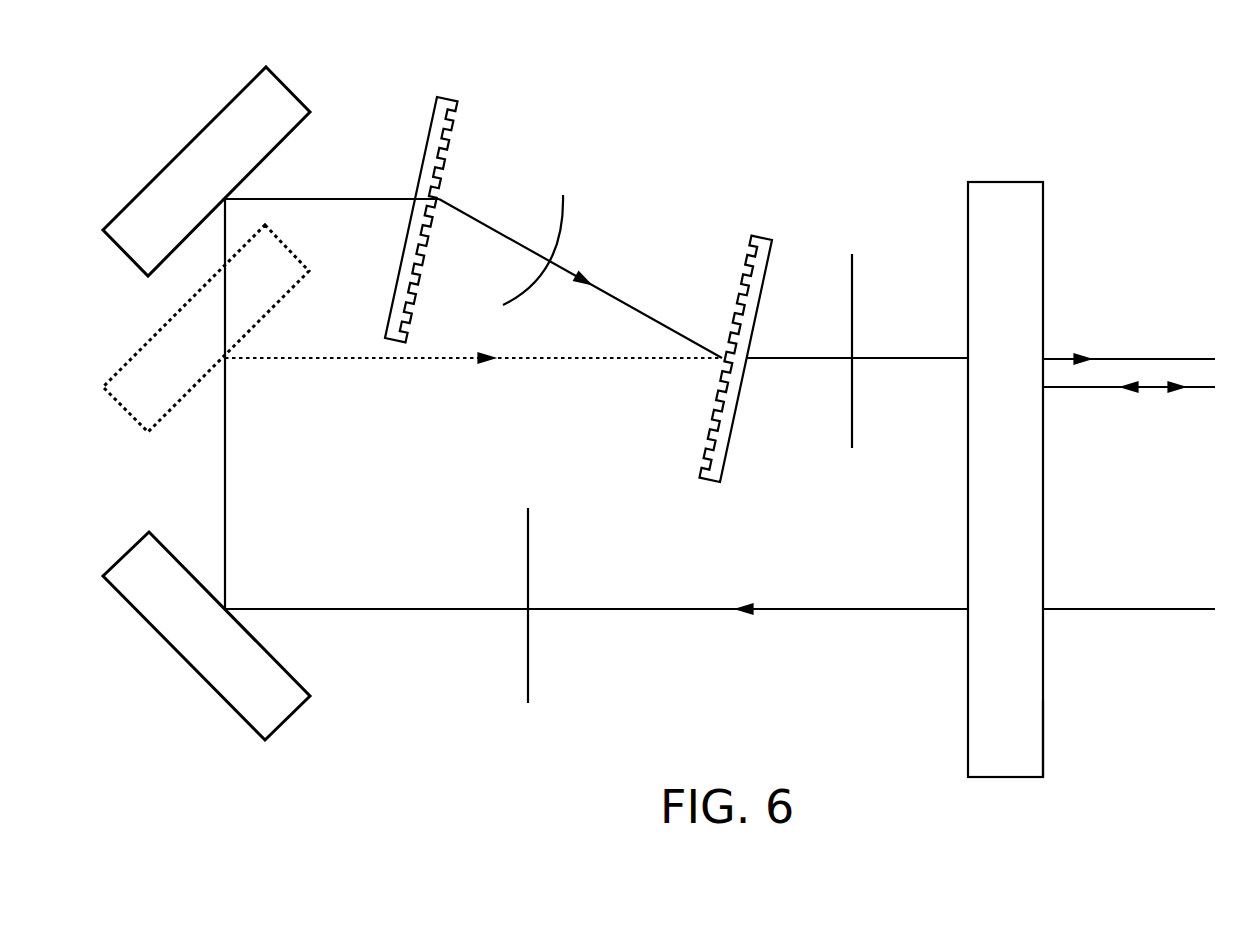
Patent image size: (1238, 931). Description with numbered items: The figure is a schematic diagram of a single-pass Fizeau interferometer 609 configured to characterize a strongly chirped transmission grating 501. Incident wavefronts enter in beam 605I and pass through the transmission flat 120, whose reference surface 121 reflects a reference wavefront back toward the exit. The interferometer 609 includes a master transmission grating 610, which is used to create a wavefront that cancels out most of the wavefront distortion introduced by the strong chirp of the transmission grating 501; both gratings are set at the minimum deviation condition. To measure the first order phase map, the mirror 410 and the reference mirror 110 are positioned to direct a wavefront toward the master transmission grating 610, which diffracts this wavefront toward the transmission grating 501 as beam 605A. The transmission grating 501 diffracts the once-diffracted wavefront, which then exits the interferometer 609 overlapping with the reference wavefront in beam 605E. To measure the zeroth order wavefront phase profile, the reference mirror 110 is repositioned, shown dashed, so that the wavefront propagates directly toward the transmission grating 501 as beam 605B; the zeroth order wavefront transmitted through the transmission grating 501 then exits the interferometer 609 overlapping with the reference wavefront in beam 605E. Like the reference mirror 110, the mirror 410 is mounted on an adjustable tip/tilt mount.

The reference mirror 110 is at (222, 130).
The mirror 410 is at (243, 703).
The beam 605A is at (313, 198).
The beam 605B is at (465, 362).
The beam 605E is at (1125, 358).
The beam 605I is at (1140, 390).
The master transmission grating 610 is at (447, 105).
The transmission grating 501 is at (758, 235).
The transmission flat 120 is at (1032, 222).
The reference surface 121 is at (1047, 726).
The interferometer 609 is at (602, 700).